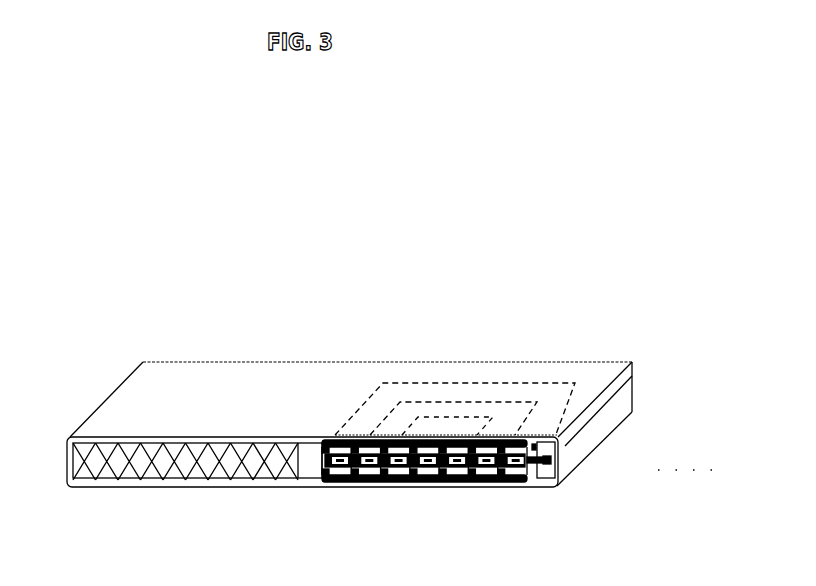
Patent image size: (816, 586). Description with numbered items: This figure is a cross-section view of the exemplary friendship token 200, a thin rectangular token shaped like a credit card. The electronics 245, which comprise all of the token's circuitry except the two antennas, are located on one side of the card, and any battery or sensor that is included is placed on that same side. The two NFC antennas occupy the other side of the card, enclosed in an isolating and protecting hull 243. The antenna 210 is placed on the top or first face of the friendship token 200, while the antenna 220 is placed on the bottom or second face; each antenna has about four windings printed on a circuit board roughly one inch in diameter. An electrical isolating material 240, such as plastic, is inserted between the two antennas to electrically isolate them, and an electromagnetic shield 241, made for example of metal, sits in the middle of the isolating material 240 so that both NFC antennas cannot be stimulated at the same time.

The friendship token 200 is at (350, 158).
The NFC antenna 210 is at (365, 403).
The antenna 220 is at (493, 483).
The electrical isolating material 240 is at (560, 445).
The electromagnetic shield 241 is at (542, 485).
The isolating and protecting hull 243 is at (602, 362).
The electronics 245 is at (150, 450).